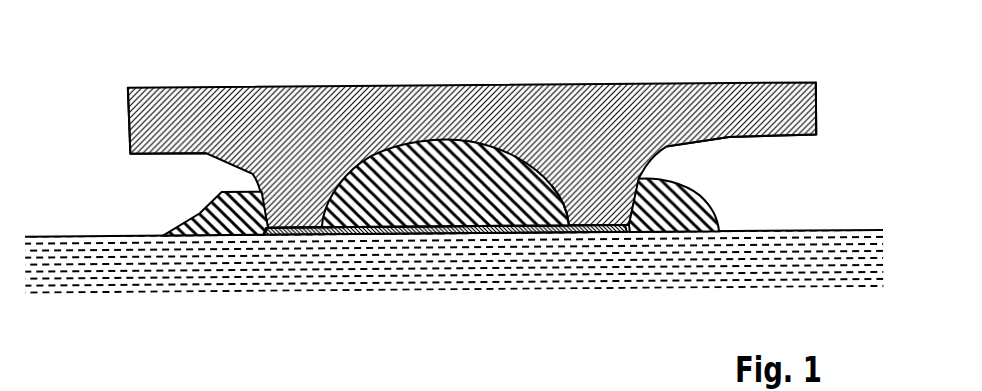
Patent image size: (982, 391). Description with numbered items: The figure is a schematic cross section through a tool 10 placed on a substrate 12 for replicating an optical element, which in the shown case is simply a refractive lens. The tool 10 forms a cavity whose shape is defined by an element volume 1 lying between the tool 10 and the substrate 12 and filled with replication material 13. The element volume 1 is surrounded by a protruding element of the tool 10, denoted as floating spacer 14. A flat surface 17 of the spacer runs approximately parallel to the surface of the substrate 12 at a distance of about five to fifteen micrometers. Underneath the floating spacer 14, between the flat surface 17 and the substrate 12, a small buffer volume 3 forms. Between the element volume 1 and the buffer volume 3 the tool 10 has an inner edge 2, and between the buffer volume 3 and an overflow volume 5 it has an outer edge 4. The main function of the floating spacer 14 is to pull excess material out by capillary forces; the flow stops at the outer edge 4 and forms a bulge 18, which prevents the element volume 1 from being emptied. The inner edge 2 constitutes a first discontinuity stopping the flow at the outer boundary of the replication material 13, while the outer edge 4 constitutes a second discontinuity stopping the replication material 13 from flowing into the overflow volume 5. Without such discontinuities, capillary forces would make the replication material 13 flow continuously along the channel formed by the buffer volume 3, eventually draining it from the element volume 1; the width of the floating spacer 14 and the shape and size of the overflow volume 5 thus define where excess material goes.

The element volume 1 is at (447, 215).
The inner edge 2 is at (567, 228).
The buffer volume 3 is at (305, 236).
The outer edge 4 is at (258, 236).
The overflow volume 5 is at (179, 173).
The tool 10 is at (267, 110).
The substrate 12 is at (210, 277).
The replication material 13 is at (427, 153).
The floating spacer 14 is at (319, 225).
The flat surface 17 is at (617, 230).
The bulge 18 is at (161, 237).